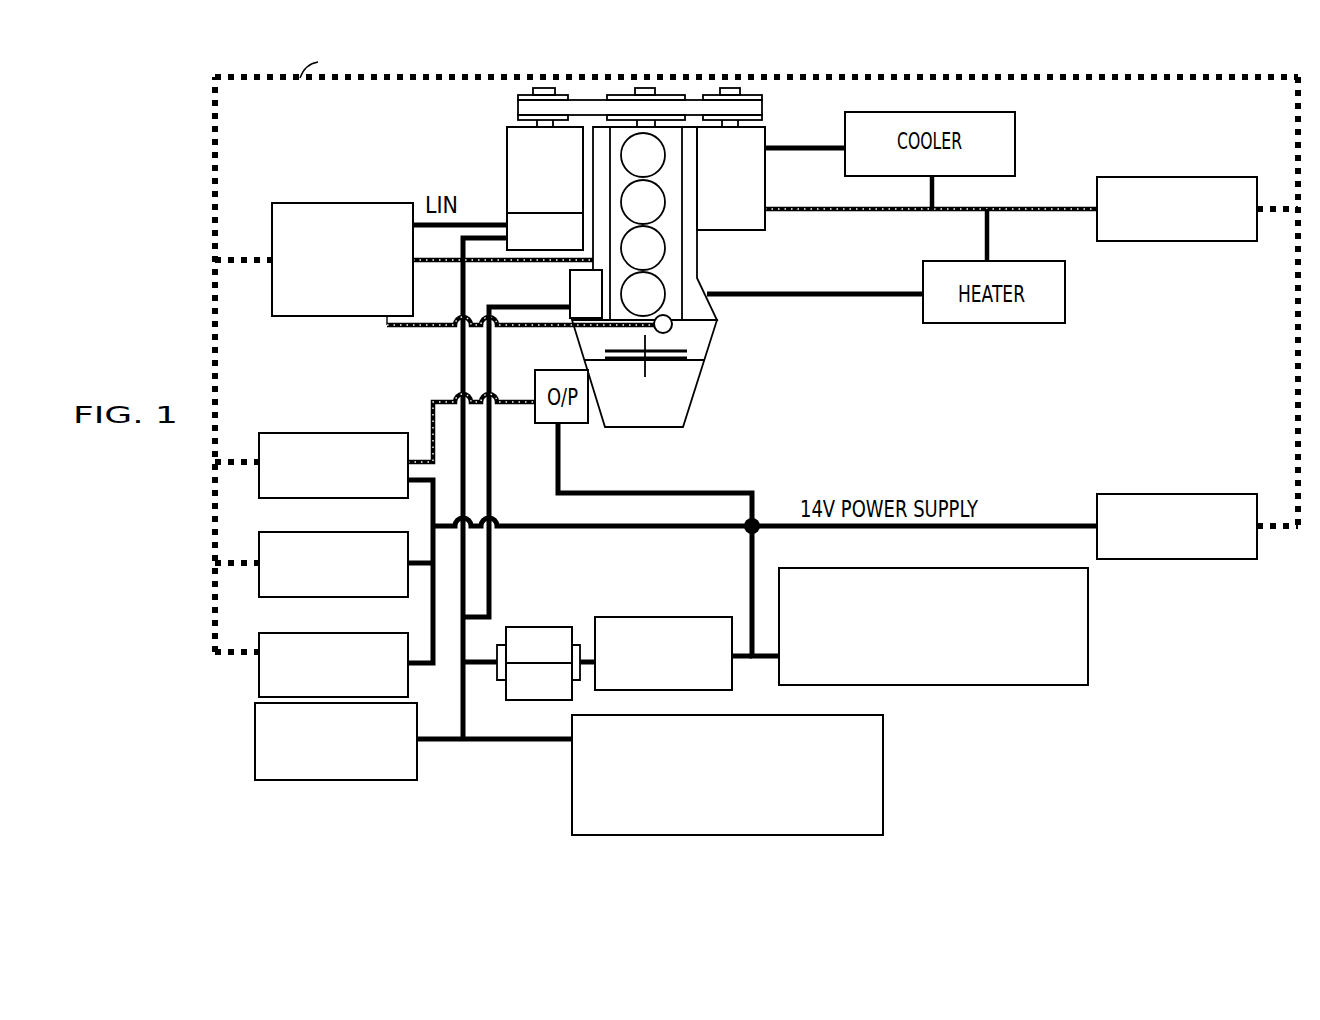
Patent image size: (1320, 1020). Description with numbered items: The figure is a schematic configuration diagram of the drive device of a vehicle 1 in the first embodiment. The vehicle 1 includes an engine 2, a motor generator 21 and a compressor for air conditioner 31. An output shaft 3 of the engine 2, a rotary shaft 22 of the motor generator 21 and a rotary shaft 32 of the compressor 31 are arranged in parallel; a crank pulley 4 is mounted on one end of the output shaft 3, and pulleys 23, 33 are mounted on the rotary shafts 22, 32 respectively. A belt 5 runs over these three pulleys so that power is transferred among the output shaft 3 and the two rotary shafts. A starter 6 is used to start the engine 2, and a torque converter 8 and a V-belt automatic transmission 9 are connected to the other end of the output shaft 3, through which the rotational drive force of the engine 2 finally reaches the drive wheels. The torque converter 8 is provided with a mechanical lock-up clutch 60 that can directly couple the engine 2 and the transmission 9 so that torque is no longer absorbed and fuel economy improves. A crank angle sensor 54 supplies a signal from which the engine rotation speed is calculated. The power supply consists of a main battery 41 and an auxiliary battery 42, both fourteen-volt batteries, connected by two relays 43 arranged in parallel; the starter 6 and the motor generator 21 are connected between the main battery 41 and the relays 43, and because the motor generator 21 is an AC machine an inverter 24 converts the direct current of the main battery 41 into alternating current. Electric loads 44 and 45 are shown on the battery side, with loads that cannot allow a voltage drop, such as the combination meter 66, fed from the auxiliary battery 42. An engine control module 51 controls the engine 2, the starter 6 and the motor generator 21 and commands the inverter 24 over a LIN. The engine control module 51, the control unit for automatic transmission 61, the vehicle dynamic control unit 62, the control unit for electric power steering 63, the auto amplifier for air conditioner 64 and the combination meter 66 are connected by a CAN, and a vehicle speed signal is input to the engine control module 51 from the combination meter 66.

The vehicle 1 is at (312, 150).
The engine 2 is at (724, 254).
The output shaft 3 is at (650, 87).
The crank pulley 4 is at (620, 95).
The belt 5 is at (590, 107).
The starter 6 is at (570, 277).
The torque converter 8 is at (698, 345).
The V-belt automatic transmission 9 is at (680, 395).
The motor generator 21 is at (515, 148).
The rotary shaft 22 is at (537, 122).
The pulley 23 is at (535, 93).
The inverter 24 is at (515, 223).
The compressor for air conditioner 31 is at (757, 183).
The rotary shaft 32 is at (740, 122).
The pulley 33 is at (752, 93).
The main battery 41 is at (406, 755).
The auxiliary battery 42 is at (627, 627).
The relay 43 is at (530, 628).
The electric loads operable in power interruption 44 is at (885, 748).
The electric loads inoperable in power interruption 45 is at (1035, 688).
The engine control module 51 is at (310, 222).
The crank angle sensor 54 is at (672, 327).
The lock-up clutch 60 is at (688, 353).
The control unit for automatic transmission 61 is at (290, 442).
The vehicle dynamic control unit 62 is at (292, 540).
The control unit for vehicle speed sensitive electric power steering 63 is at (297, 643).
The auto amplifier for air conditioner 64 is at (1222, 183).
The combination meter 66 is at (1222, 559).